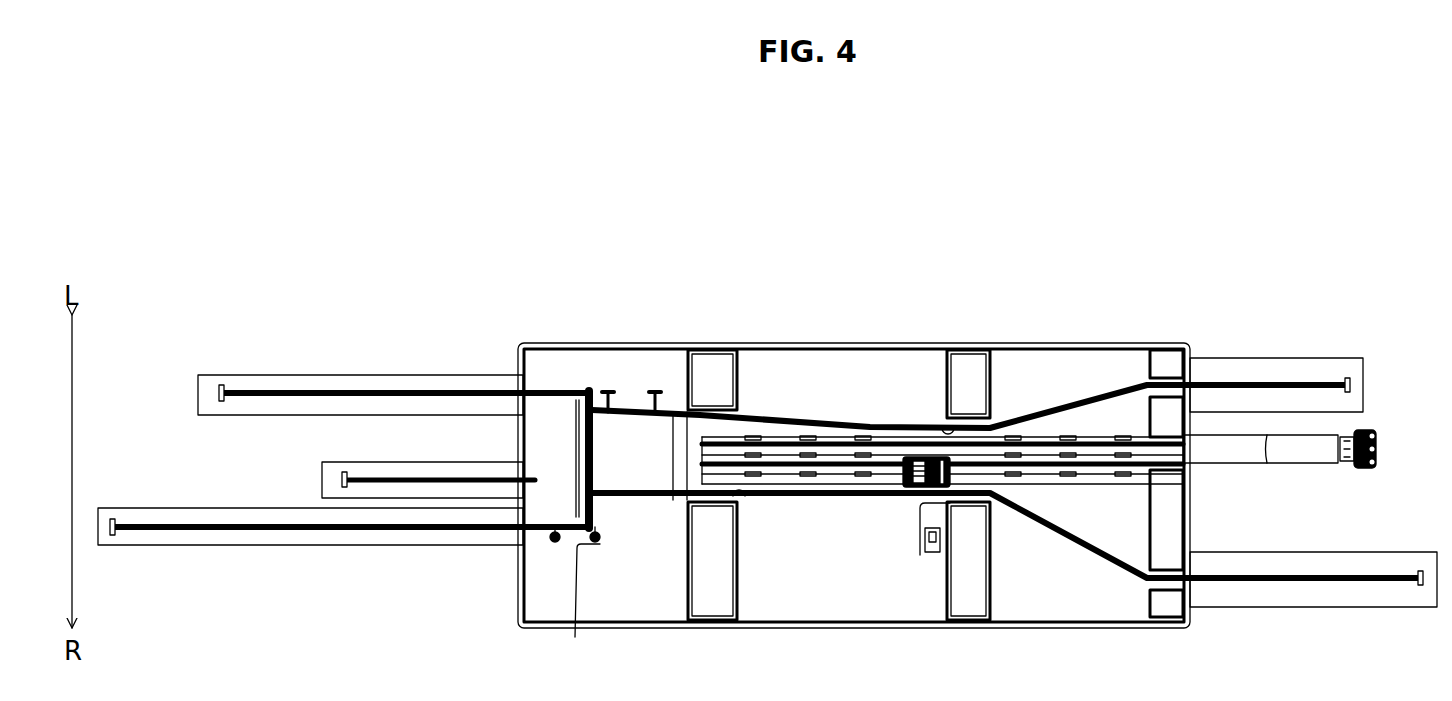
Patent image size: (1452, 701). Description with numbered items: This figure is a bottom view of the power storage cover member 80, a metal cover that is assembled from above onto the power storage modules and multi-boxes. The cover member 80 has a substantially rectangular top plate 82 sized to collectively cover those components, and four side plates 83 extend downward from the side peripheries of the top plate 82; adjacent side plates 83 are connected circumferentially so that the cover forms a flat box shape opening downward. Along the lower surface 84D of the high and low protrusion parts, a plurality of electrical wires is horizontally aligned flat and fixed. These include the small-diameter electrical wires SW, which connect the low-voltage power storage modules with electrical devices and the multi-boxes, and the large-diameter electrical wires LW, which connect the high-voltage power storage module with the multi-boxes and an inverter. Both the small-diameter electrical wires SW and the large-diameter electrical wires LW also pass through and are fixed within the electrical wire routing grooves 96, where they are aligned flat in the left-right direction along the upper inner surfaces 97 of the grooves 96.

The power storage cover member 80 is at (848, 322).
The top plate 82 is at (768, 365).
The side plates 83 is at (1021, 343).
The lower surface 84D is at (917, 580).
The electrical wire routing grooves 96 is at (935, 427).
The inner surfaces 97 is at (717, 427).
The small-diameter electrical wires SW is at (643, 415).
The large-diameter electrical wires LW is at (840, 490).